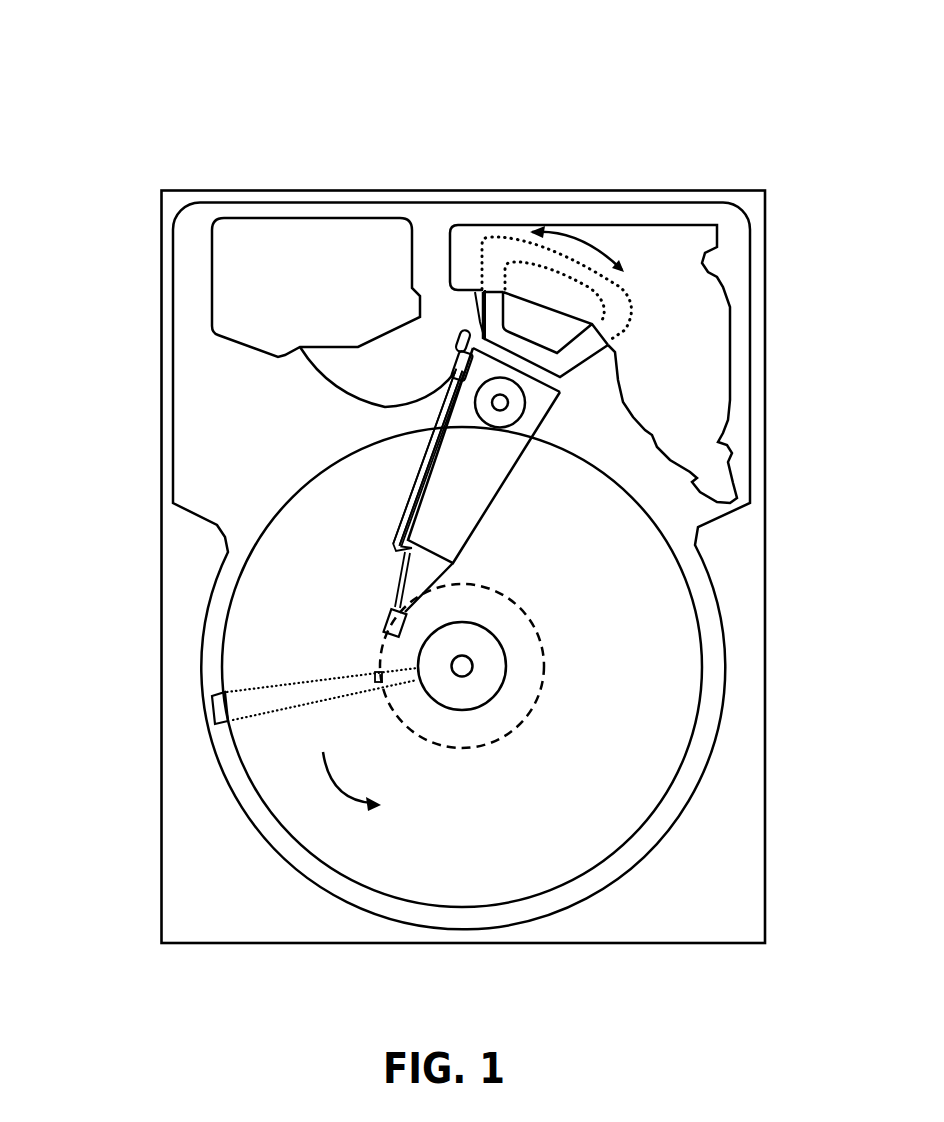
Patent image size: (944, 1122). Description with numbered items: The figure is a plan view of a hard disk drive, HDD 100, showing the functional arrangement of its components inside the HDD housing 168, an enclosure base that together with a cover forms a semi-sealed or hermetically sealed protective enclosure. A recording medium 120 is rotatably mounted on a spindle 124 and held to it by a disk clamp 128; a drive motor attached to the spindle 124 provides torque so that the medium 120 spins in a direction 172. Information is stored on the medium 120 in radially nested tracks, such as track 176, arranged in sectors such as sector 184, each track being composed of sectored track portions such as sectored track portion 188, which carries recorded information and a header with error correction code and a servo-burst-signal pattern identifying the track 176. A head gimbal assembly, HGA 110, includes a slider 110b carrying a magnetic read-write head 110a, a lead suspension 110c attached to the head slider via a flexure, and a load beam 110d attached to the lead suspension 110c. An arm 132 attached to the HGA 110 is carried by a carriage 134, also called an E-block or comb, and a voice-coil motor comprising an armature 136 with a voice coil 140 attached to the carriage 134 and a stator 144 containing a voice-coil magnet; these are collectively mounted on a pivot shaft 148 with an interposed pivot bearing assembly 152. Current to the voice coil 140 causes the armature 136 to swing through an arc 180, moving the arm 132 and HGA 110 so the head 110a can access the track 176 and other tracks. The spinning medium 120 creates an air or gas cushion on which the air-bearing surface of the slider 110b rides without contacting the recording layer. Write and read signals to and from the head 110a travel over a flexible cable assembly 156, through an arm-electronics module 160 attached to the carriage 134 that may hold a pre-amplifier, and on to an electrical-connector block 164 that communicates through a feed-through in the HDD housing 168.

The hard disk drive 100 is at (92, 75).
The head gimbal assembly 110 is at (254, 493).
The magnetic read-write head 110a is at (397, 633).
The slider 110b is at (397, 613).
The lead suspension 110c is at (407, 580).
The load beam 110d is at (397, 550).
The recording medium 120 is at (633, 622).
The spindle 124 is at (473, 662).
The disk clamp 128 is at (487, 680).
The arm 132 is at (458, 511).
The carriage 134 is at (514, 430).
The armature 136 is at (480, 322).
The voice coil 140 is at (495, 300).
The stator 144 is at (698, 312).
The pivot shaft 148 is at (508, 403).
The pivot bearing assembly 152 is at (512, 413).
The flexible cable assembly 156 is at (330, 383).
The arm-electronics module 160 is at (453, 373).
The electrical-connector block 164 is at (235, 287).
The HDD housing 168 is at (747, 203).
The direction 172 is at (380, 780).
The track 176 is at (533, 630).
The arc 180 is at (573, 240).
The sector 184 is at (213, 708).
The sectored track portion 188 is at (378, 678).